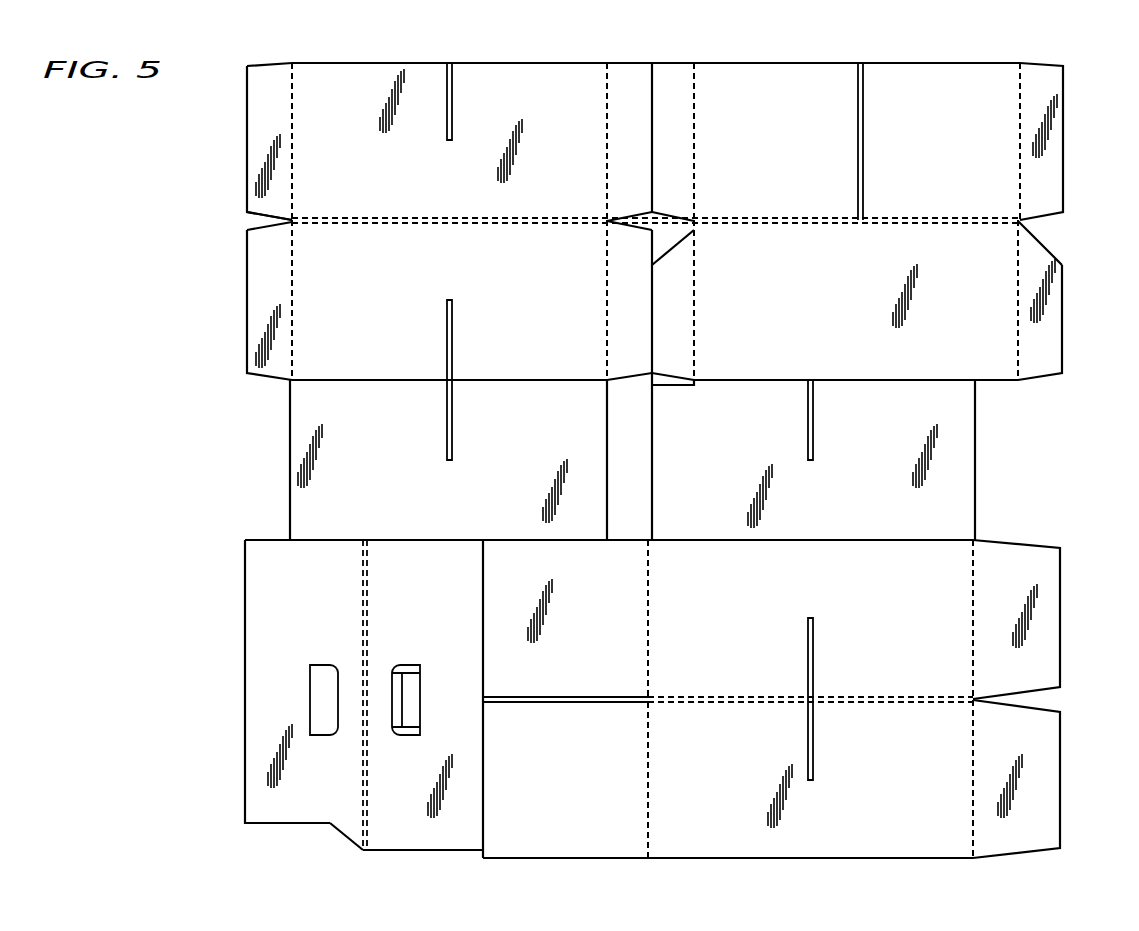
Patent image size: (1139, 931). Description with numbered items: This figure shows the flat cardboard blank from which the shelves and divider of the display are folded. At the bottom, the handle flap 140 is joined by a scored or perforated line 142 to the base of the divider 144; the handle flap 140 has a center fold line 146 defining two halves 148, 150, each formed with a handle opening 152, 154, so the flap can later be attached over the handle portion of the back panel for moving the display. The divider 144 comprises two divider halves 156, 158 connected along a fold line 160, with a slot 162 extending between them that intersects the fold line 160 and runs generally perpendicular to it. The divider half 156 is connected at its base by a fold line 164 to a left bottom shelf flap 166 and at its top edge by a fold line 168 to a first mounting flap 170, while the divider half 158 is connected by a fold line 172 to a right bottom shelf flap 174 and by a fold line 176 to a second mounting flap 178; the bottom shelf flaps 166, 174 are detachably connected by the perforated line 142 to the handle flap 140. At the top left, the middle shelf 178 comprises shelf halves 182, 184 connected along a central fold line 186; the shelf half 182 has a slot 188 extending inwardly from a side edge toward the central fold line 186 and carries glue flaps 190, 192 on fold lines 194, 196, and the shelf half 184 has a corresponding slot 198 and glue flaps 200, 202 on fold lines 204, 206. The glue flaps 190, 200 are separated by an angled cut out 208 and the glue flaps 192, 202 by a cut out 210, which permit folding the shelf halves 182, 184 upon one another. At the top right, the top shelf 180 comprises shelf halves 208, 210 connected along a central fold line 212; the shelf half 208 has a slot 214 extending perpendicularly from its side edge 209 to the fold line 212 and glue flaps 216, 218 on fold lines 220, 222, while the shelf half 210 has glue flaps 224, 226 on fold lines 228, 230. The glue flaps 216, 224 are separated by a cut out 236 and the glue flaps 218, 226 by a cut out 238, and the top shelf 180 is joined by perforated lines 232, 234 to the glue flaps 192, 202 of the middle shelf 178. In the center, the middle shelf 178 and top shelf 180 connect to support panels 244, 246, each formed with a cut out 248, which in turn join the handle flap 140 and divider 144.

The handle flap 140 is at (216, 638).
The scored or perforated line 142 is at (482, 585).
The divider 144 is at (1018, 512).
The center fold line 146 is at (365, 590).
The handle flap half 148 is at (262, 582).
The handle flap half 150 is at (393, 818).
The handle opening 152 is at (320, 680).
The handle opening 154 is at (405, 692).
The divider half 156 is at (734, 642).
The divider half 158 is at (734, 804).
The fold line 160 is at (904, 706).
The slot 162 is at (813, 646).
The fold line 164 is at (648, 603).
The left bottom shelf flap 166 is at (565, 642).
The fold line 168 is at (973, 592).
The first mounting flap 170 is at (1055, 603).
The fold line 172 is at (648, 762).
The right bottom shelf flap 174 is at (594, 807).
The fold line 176 is at (973, 793).
The middle shelf 178 is at (226, 328).
The top shelf 180 is at (1003, 410).
The shelf half 182 is at (450, 168).
The shelf half 184 is at (449, 347).
The central fold line 186 is at (378, 218).
The slot 188 is at (452, 110).
The glue flap 190 is at (260, 120).
The glue flap 192 is at (624, 77).
The fold line 194 is at (292, 124).
The fold line 196 is at (608, 143).
The slot 198 is at (447, 321).
The glue flap 200 is at (262, 296).
The glue flap 202 is at (620, 355).
The fold line 204 is at (292, 297).
The fold line 206 is at (607, 296).
The shelf half 208 is at (262, 221).
The side edge 209 is at (924, 60).
The shelf half 210 is at (652, 212).
The central fold line 212 is at (813, 223).
The slot 214 is at (865, 130).
The glue flap 216 is at (673, 73).
The glue flap 218 is at (1039, 83).
The fold line 220 is at (697, 120).
The fold line 222 is at (1020, 110).
The glue flap 224 is at (675, 333).
The glue flap 226 is at (1040, 337).
The fold line 228 is at (695, 271).
The fold line 230 is at (1018, 300).
The scored or perforated line 232 is at (652, 100).
The scored or perforated line 234 is at (652, 353).
The cut out 236 is at (670, 223).
The cut out 238 is at (1042, 230).
The support panel 244 is at (448, 460).
The support panel 246 is at (813, 456).
The cut out 248 is at (452, 430).